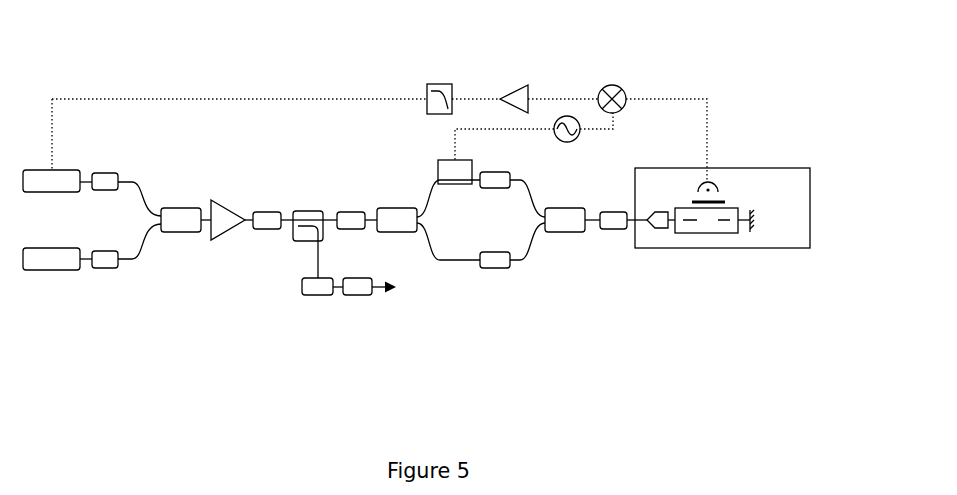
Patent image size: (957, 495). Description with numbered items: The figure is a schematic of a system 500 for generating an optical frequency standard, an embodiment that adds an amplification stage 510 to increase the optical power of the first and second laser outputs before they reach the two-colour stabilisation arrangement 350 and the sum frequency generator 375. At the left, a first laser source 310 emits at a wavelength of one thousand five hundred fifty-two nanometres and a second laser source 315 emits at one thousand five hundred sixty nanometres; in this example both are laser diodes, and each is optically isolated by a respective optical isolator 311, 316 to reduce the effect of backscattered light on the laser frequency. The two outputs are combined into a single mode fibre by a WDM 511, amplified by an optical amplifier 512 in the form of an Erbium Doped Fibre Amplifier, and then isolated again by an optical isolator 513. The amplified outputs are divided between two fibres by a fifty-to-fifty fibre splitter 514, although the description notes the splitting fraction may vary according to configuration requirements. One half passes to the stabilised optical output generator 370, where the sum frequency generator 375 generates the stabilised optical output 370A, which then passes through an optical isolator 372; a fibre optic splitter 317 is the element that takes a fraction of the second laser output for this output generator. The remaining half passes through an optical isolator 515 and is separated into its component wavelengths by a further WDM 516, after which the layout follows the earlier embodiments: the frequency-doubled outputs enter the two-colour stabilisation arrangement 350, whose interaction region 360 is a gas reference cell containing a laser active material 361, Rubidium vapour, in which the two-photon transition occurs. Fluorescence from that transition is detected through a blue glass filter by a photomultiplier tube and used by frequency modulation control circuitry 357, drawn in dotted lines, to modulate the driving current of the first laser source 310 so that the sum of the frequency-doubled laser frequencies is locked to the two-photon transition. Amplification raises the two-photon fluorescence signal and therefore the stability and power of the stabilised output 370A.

The system for generating an optical frequency standard 500 is at (99, 65).
The first laser source 310 is at (40, 168).
The optical isolator 311 is at (112, 191).
The second laser source 315 is at (62, 272).
The optical isolator 316 is at (102, 270).
The fibre optic splitter 317 is at (149, 248).
The amplification stage 510 is at (256, 162).
The wavelength division multiplexer 511 is at (182, 207).
The optical amplifier 512 is at (239, 211).
The optical isolator 513 is at (266, 212).
The 50:50 fibre splitter 514 is at (325, 211).
The optical isolator 515 is at (356, 230).
The wavelength division multiplexer 516 is at (413, 208).
The two-colour stabilisation arrangement 350 is at (692, 65).
The frequency modulation control circuitry 357 is at (484, 64).
The interaction region 360 is at (752, 145).
The laser active material 361 is at (788, 249).
The stabilised optical output generator 370 is at (452, 308).
The stabilised optical output 370A is at (406, 305).
The optical isolator 372 is at (360, 297).
The sum frequency generator 375 is at (302, 296).